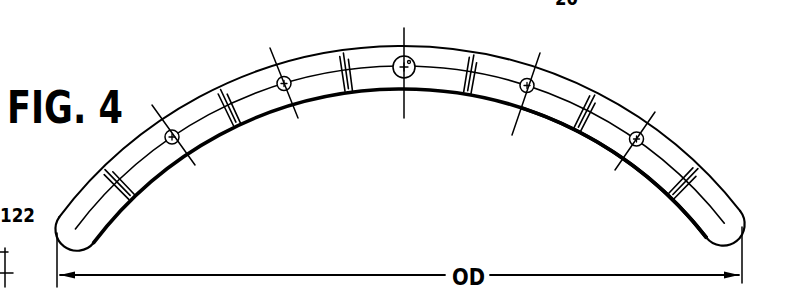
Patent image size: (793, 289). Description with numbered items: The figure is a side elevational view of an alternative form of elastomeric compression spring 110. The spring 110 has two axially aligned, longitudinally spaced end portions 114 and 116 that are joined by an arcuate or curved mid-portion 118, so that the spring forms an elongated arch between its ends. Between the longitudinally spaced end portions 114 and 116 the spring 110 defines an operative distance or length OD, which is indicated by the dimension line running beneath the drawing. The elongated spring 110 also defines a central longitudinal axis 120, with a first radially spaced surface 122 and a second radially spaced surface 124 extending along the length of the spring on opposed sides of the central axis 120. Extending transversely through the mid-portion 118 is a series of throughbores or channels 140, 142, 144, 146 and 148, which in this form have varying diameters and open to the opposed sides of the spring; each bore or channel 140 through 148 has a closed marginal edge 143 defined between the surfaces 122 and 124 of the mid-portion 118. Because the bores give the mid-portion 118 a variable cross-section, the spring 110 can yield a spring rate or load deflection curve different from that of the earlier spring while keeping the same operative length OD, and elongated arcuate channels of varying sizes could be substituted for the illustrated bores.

The elastomeric compression spring 110 is at (177, 86).
The end portion 114 is at (93, 236).
The end portion 116 is at (707, 222).
The mid-portion 118 is at (356, 89).
The central longitudinal axis 120 is at (670, 167).
The first radially spaced surface 122 is at (508, 57).
The second radially spaced surface 124 is at (577, 132).
The throughbore 140 is at (174, 144).
The throughbore 142 is at (293, 60).
The closed marginal edge 143 is at (408, 79).
The throughbore 144 is at (415, 62).
The throughbore 146 is at (517, 92).
The throughbore 148 is at (627, 127).